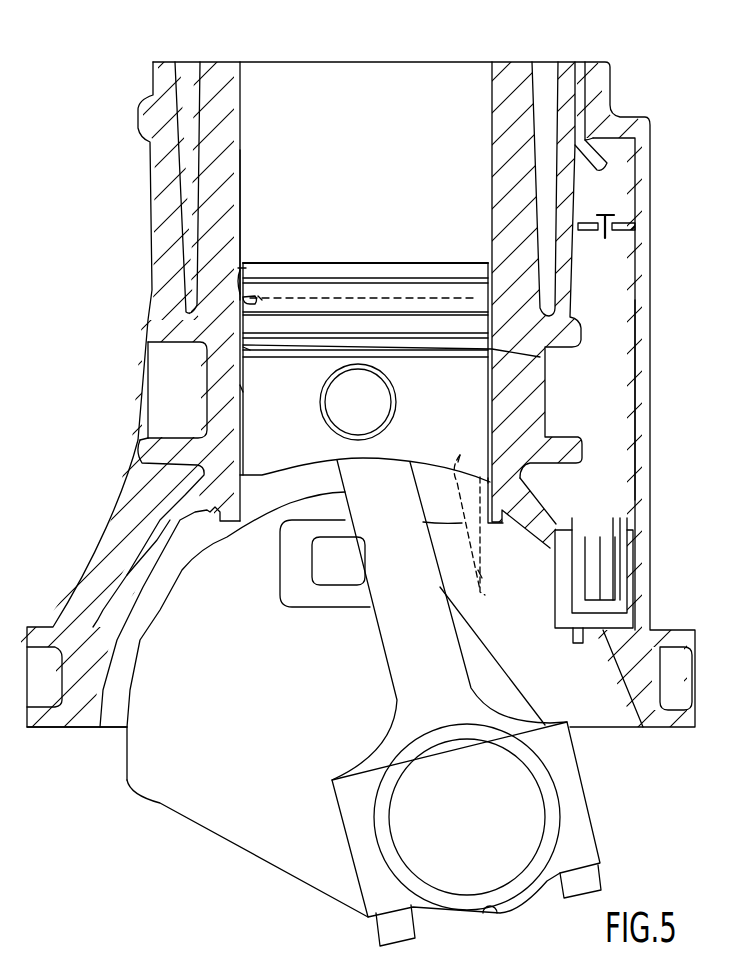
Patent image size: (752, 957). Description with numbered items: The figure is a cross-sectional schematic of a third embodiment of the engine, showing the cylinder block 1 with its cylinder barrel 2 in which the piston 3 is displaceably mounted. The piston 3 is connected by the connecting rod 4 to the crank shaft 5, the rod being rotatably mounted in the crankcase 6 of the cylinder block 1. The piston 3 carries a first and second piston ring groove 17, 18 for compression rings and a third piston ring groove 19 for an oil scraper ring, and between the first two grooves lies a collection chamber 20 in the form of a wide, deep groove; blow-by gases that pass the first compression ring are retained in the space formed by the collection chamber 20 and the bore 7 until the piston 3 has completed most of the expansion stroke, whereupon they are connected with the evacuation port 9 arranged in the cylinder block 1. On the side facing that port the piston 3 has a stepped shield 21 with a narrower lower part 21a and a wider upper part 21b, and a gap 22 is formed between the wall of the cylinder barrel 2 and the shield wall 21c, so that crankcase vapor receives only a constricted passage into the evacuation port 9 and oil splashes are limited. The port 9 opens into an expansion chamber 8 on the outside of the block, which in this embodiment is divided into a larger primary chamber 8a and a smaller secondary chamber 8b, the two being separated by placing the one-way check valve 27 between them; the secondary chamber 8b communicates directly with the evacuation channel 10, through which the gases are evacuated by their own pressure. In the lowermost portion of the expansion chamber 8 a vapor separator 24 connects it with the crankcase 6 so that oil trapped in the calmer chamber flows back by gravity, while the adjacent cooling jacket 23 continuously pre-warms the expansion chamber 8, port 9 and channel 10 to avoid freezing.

The cylinder block 1 is at (222, 80).
The cylinder barrel 2 is at (240, 147).
The piston 3 is at (257, 425).
The connecting rod 4 is at (402, 658).
The crank shaft 5 is at (518, 823).
The crankcase 6 is at (102, 717).
The bore 7 is at (333, 300).
The expansion chamber 8 is at (622, 275).
The primary chamber 8a is at (627, 396).
The secondary chamber 8b is at (620, 170).
The evacuation port 9 is at (540, 357).
The evacuation channel 10 is at (580, 82).
The first piston ring groove 17 is at (233, 290).
The second piston ring groove 18 is at (265, 352).
The third piston ring groove 19 is at (247, 392).
The collection chamber 20 is at (262, 290).
The shield 21 is at (446, 506).
The lower part of the shield 21a is at (478, 573).
The upper part of the shield 21b is at (470, 445).
The shield wall 21c is at (497, 560).
The gap 22 is at (503, 527).
The cooling jacket 23 is at (550, 86).
The vapor separator 24 is at (620, 556).
The one-way check valve 27 is at (610, 217).